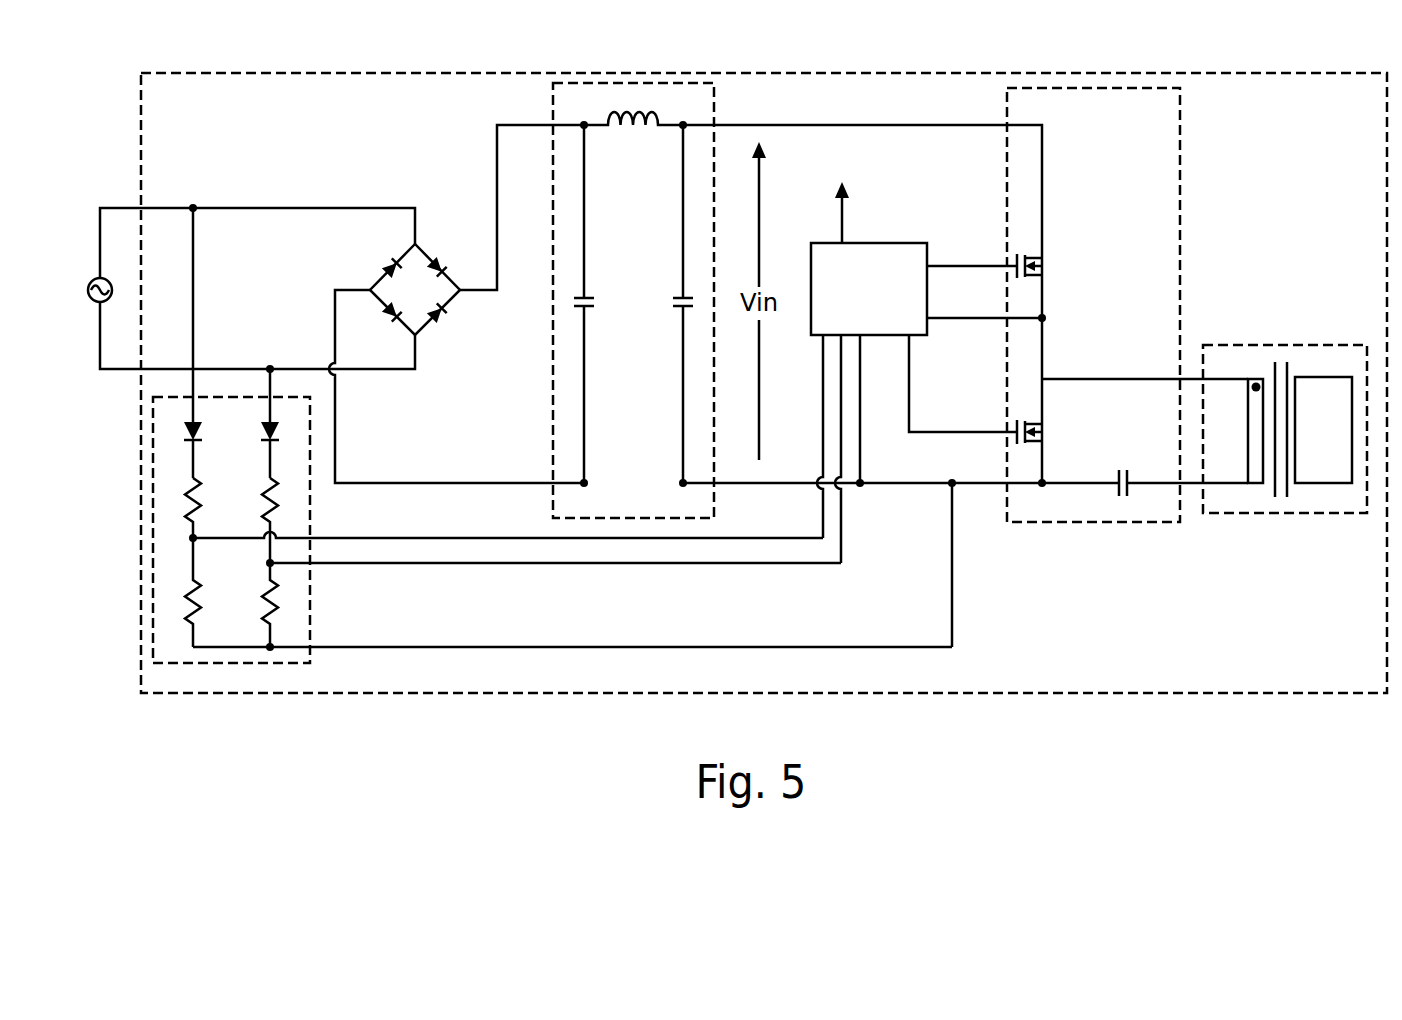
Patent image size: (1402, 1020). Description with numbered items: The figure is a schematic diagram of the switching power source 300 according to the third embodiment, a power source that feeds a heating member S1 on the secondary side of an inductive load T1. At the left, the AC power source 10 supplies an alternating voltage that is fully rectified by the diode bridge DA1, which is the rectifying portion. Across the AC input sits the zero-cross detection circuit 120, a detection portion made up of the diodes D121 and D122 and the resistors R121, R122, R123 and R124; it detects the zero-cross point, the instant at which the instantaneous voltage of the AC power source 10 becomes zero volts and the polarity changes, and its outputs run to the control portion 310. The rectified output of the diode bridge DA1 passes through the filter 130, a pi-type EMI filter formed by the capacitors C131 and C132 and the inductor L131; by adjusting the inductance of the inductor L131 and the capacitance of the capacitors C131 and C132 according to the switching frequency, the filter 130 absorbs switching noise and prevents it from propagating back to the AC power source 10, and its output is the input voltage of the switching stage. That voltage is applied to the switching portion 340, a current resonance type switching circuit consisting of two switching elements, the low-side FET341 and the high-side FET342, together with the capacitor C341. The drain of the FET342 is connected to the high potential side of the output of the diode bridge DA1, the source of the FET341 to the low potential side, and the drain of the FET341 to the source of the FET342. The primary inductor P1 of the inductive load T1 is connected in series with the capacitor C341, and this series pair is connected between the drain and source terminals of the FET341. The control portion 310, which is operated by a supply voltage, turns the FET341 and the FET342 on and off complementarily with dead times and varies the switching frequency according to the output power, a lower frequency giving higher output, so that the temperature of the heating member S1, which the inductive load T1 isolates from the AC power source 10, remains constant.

The AC power source 10 is at (87, 262).
The zero-cross detection circuit 120 is at (370, 539).
The diode D121 is at (205, 410).
The diode D122 is at (278, 412).
The resistor R121 is at (178, 500).
The resistor R122 is at (178, 603).
The resistor R123 is at (292, 497).
The resistor R124 is at (292, 605).
The diode bridge DA1 is at (443, 243).
The filter 130 is at (633, 300).
The inductor L131 is at (633, 133).
The capacitor C131 is at (606, 305).
The capacitor C132 is at (665, 322).
The control portion 310 is at (928, 358).
The switching portion 340 is at (1091, 321).
The low-side FET FET341 is at (1027, 423).
The high-side FET FET342 is at (1020, 248).
The capacitor C341 is at (1125, 462).
The inductive load T1 is at (1285, 411).
The primary inductor P1 is at (1235, 431).
The heating member S1 is at (1323, 430).
The switching power source 300 is at (764, 400).